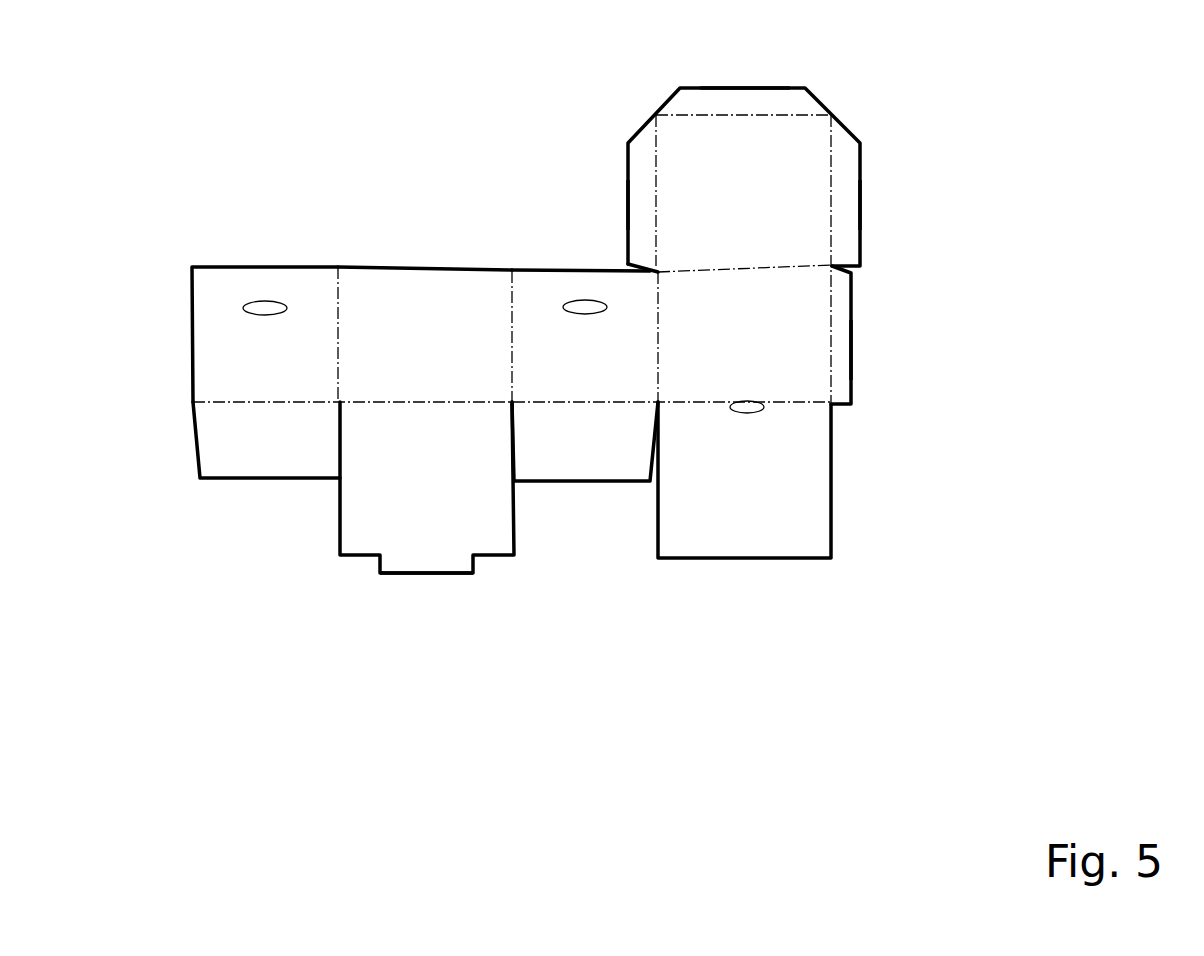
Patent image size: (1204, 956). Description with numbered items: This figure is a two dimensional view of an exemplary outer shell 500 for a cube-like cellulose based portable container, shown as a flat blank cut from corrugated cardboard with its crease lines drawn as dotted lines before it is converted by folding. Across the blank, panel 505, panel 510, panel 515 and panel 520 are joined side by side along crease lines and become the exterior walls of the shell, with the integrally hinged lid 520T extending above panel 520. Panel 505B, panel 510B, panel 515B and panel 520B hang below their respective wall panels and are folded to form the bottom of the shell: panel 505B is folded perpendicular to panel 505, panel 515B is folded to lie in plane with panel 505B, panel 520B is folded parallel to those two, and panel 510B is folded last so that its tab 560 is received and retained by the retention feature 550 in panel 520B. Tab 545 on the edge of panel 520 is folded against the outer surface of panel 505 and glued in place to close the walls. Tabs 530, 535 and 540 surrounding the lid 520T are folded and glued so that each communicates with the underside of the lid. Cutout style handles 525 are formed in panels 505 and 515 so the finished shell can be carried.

The outer shell 500 is at (255, 79).
The panel 505 is at (243, 366).
The panel 505B is at (250, 455).
The panel 510 is at (402, 361).
The panel 510B is at (409, 493).
The panel 515 is at (566, 366).
The panel 515B is at (568, 455).
The panel 520 is at (727, 361).
The integrally hinged lid 520T is at (731, 210).
The panel 520B is at (730, 490).
The cutout style handles 525 is at (263, 300).
The tab 530 is at (640, 190).
The tab 535 is at (768, 104).
The tab 540 is at (845, 192).
The tab 545 is at (839, 338).
The retention feature 550 is at (745, 413).
The tab 560 is at (428, 560).